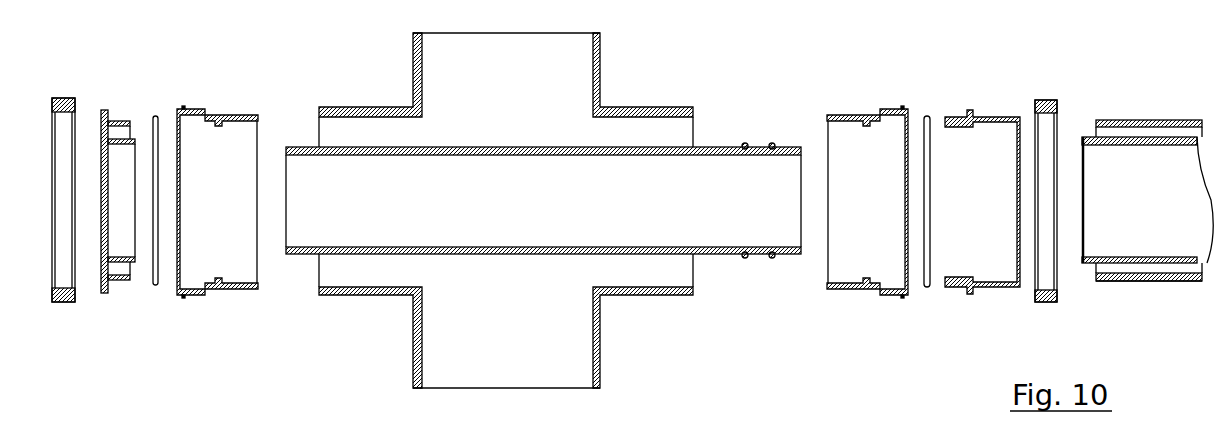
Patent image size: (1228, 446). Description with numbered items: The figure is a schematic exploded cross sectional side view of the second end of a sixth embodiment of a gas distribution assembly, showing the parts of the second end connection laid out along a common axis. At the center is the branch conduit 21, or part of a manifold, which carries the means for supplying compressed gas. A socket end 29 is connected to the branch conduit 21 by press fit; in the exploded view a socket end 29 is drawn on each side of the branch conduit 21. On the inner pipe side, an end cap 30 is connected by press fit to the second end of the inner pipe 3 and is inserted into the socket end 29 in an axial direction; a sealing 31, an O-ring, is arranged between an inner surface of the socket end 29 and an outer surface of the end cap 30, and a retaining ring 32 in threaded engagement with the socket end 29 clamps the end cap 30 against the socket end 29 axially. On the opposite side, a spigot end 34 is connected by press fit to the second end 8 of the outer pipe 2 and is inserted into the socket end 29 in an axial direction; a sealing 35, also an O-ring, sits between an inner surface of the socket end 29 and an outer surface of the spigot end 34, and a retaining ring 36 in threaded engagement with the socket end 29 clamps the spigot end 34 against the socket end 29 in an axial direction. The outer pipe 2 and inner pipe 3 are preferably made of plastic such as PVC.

The outer pipe 2 is at (1118, 281).
The inner pipe 3 is at (1167, 263).
The second end 8 is at (1100, 120).
The branch conduit 21 is at (382, 295).
The socket end 29 is at (220, 120).
The end cap 30 is at (105, 110).
The sealing 31 is at (157, 116).
The retaining ring 32 is at (65, 99).
The spigot end 34 is at (990, 117).
The sealing 35 is at (928, 116).
The retaining ring 36 is at (1050, 100).